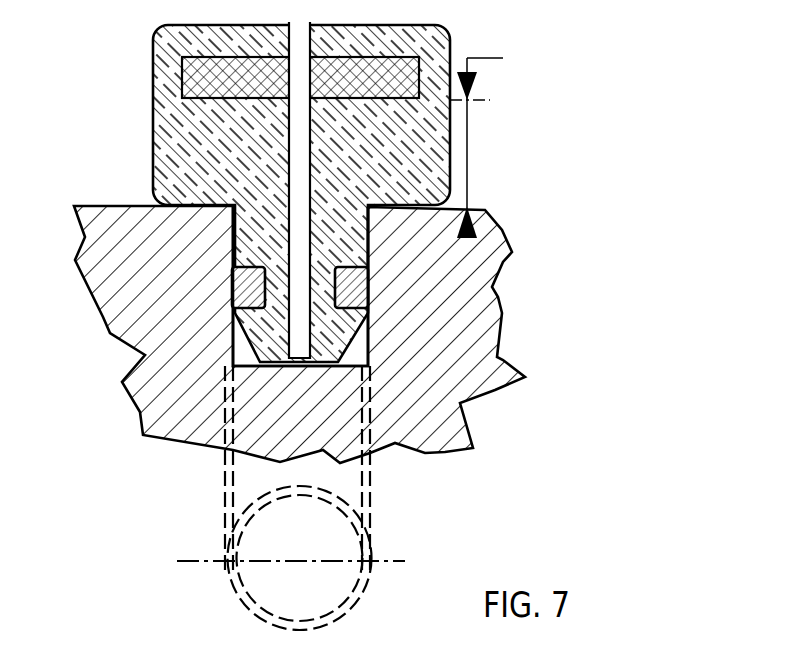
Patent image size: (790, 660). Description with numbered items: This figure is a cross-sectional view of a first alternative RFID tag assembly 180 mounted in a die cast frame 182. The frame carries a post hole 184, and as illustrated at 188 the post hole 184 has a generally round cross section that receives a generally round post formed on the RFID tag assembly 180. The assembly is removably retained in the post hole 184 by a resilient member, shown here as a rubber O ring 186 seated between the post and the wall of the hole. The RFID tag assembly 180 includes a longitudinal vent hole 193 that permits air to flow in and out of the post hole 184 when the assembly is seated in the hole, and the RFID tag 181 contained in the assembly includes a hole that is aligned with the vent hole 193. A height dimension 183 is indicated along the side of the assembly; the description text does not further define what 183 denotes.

The RFID tag assembly 180 is at (638, 82).
The RFID tag 181 is at (207, 77).
The die cast frame 182 is at (503, 360).
The height dimension 183 is at (502, 144).
The post hole 184 is at (242, 348).
The rubber O ring 186 is at (352, 288).
The round cross section of post hole 188 is at (237, 595).
The longitudinal vent hole 193 is at (300, 160).